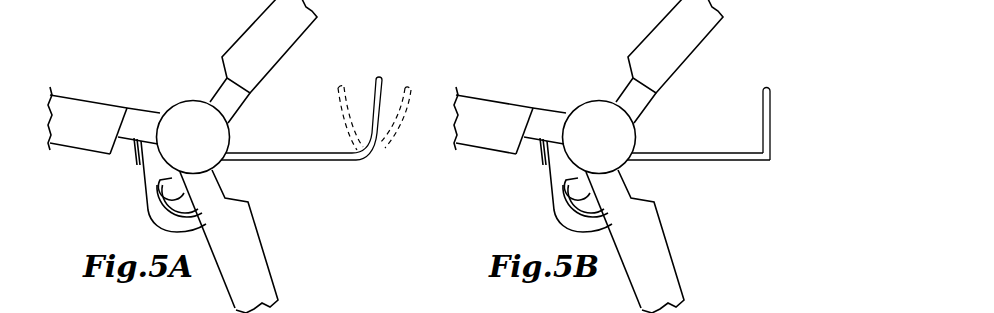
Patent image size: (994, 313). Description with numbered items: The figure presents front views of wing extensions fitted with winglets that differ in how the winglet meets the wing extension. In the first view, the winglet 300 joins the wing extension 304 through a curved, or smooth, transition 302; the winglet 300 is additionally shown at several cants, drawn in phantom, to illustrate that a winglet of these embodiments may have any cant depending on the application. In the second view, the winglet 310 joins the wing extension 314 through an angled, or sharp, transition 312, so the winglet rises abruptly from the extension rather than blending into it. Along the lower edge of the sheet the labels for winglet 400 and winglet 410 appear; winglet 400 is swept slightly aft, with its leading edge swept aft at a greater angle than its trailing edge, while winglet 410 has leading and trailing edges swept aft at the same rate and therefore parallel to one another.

In FIG. 5A, the winglet 300 is at (316, 140).
In FIG. 5A, the curved transition 302 is at (360, 162).
In FIG. 5A, the wing extension 304 is at (283, 162).
In FIG. 5B, the winglet 310 is at (731, 151).
In FIG. 5B, the angled transition 312 is at (770, 162).
In FIG. 5B, the wing extension 314 is at (693, 162).
In FIG. 5A, the winglet 400 is at (202, 309).
In FIG. 5A, the winglet 410 is at (426, 309).